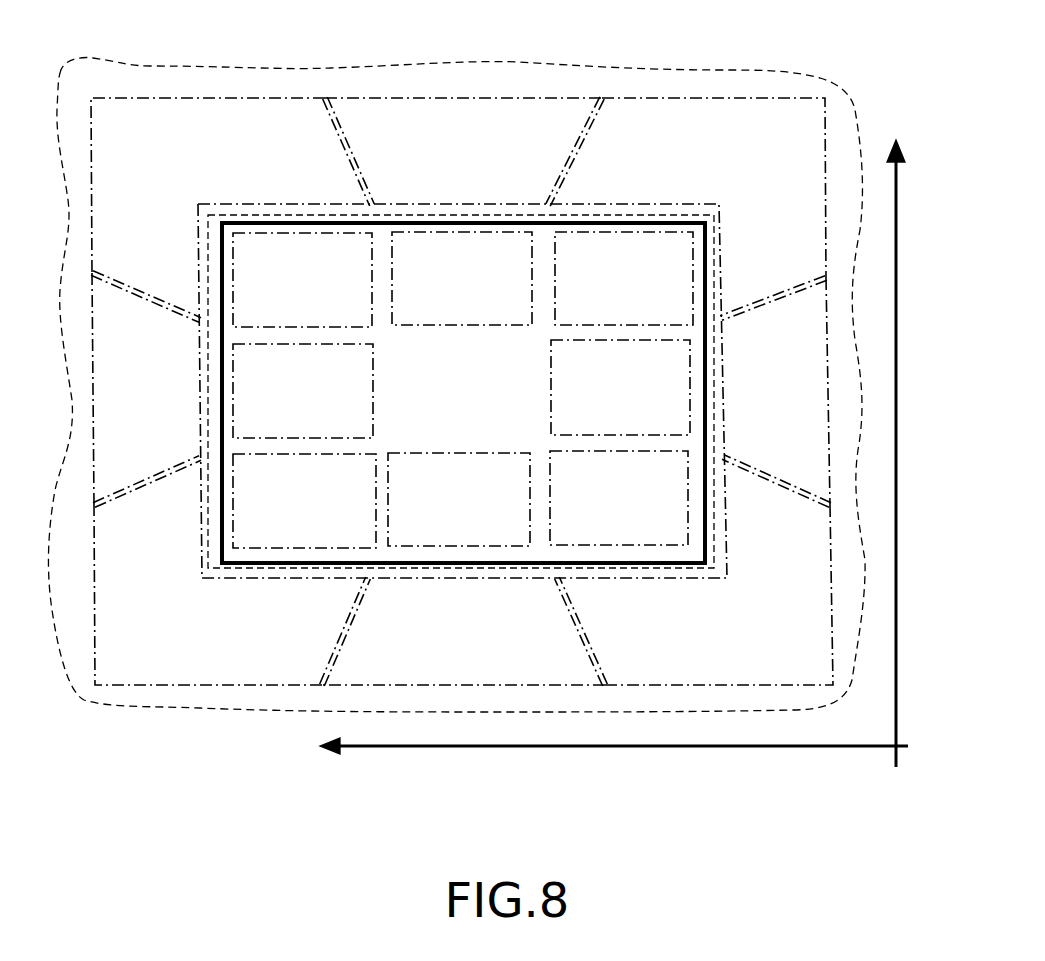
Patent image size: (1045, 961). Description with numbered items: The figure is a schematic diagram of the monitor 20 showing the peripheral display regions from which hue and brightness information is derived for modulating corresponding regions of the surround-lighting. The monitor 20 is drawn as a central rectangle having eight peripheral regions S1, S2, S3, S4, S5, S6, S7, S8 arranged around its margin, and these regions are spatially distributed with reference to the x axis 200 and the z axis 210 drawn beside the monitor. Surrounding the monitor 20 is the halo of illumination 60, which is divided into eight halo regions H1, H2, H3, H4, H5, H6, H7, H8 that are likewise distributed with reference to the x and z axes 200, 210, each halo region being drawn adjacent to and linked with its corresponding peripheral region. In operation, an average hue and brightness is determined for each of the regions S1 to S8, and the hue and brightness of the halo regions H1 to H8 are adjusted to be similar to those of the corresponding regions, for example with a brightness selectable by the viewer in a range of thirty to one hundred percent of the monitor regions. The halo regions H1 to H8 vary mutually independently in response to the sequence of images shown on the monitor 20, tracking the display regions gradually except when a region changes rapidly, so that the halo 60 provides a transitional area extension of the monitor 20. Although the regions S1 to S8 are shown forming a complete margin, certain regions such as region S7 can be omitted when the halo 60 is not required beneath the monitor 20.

The halo of illumination 60 is at (222, 80).
The monitor 20 is at (452, 402).
The x axis 200 is at (507, 747).
The z axis 210 is at (896, 680).
The halo region H1 is at (776, 392).
The halo region H2 is at (714, 209).
The halo region H3 is at (464, 151).
The halo region H4 is at (232, 209).
The halo region H5 is at (129, 389).
The halo region H6 is at (207, 570).
The halo region H7 is at (462, 631).
The halo region H8 is at (694, 595).
The peripheral region S1 is at (620, 387).
The peripheral region S2 is at (624, 278).
The peripheral region S3 is at (462, 278).
The peripheral region S4 is at (302, 280).
The peripheral region S5 is at (303, 391).
The peripheral region S6 is at (304, 501).
The peripheral region S7 is at (459, 499).
The peripheral region S8 is at (619, 498).